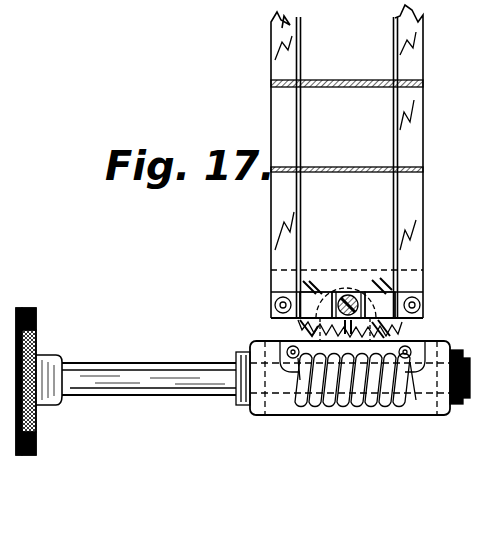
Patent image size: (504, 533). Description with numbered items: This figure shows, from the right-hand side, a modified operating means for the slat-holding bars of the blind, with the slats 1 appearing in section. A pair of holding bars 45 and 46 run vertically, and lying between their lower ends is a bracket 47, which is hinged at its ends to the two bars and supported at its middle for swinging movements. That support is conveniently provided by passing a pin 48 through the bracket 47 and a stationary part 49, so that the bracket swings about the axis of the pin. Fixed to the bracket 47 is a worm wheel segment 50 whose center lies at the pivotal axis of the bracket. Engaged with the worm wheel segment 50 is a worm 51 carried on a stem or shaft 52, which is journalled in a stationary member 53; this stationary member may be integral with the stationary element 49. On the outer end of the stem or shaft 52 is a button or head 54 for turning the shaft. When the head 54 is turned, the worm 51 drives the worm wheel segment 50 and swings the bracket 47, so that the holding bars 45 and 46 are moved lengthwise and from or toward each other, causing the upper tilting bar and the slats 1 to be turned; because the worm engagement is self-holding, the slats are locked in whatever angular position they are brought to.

The slats 1 is at (101, 95).
The holding bar 45 is at (405, 108).
The holding bar 46 is at (283, 110).
The bracket 47 is at (308, 310).
The pin 48 is at (345, 298).
The stationary part 49 is at (389, 274).
The worm wheel segment 50 is at (400, 332).
The worm 51 is at (345, 408).
The stem or shaft 52 is at (160, 345).
The stationary member 53 is at (286, 412).
The button or head 54 is at (36, 320).